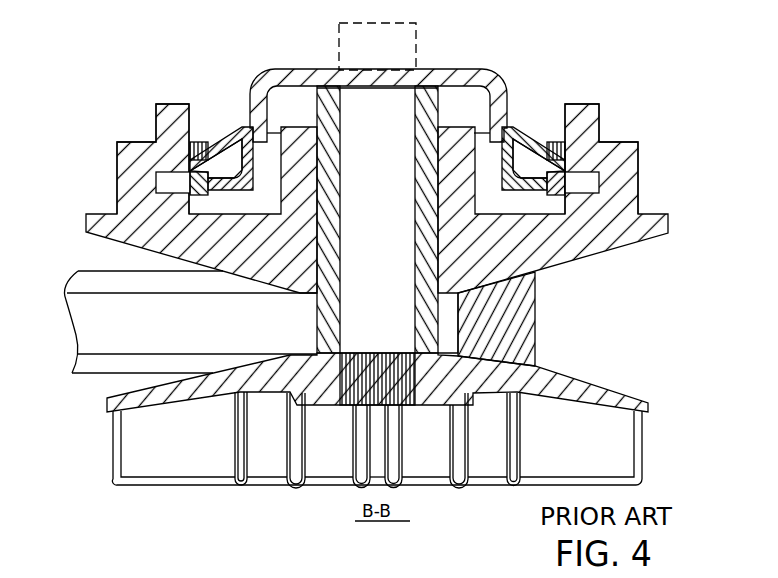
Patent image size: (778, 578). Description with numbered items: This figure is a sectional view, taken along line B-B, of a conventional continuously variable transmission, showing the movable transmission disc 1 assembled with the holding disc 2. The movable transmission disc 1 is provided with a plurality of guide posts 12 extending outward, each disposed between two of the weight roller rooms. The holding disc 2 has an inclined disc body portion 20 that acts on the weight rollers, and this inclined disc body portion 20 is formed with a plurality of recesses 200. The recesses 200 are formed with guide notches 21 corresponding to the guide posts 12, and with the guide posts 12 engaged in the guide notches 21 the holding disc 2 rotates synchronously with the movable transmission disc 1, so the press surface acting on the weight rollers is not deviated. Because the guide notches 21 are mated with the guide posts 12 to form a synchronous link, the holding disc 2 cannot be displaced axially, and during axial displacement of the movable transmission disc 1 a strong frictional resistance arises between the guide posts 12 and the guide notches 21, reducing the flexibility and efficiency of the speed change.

The movable transmission disc 1 is at (86, 221).
The holding disc 2 is at (455, 78).
The guide posts 12 is at (163, 113).
The inclined disc body portion 20 is at (236, 131).
The recesses 200 is at (231, 148).
The guide notches 21 is at (163, 187).